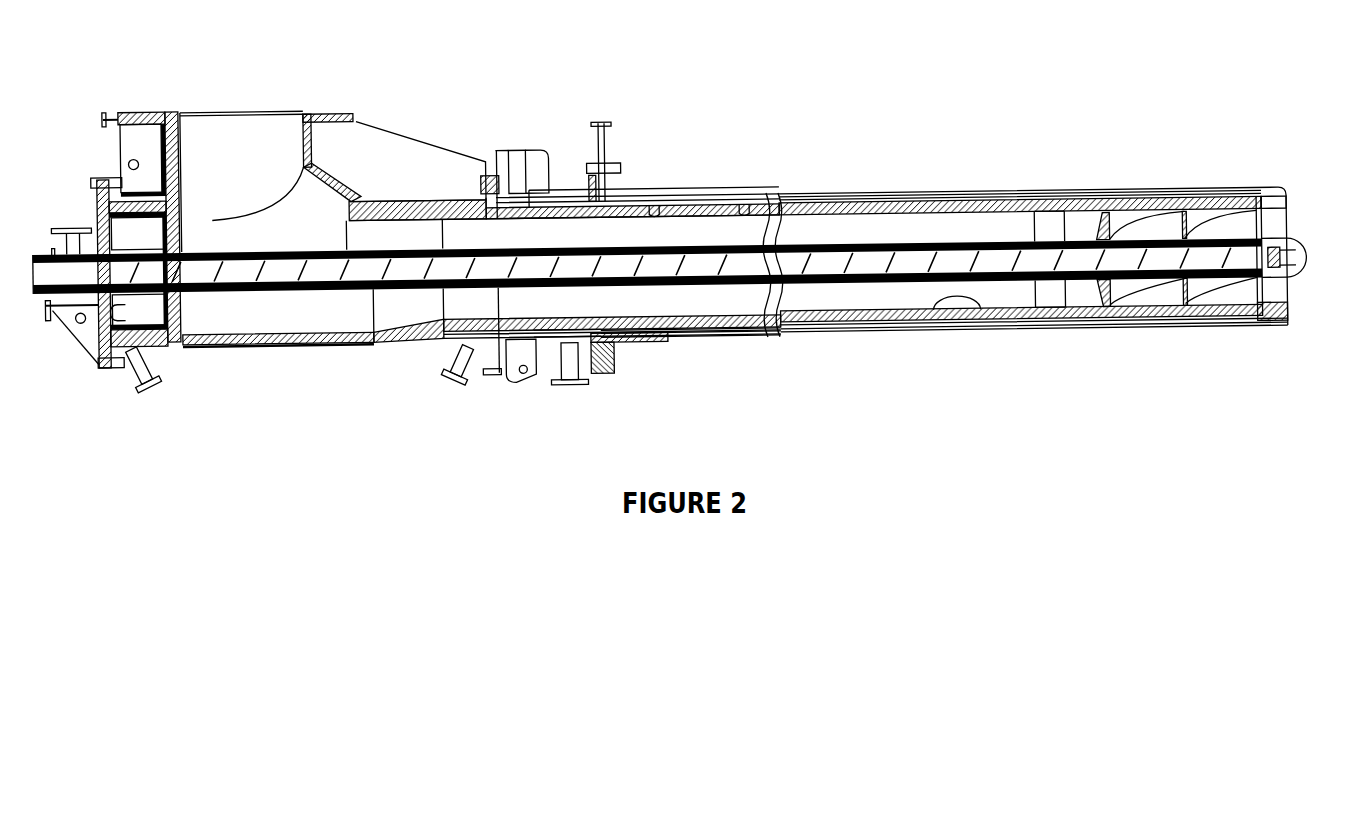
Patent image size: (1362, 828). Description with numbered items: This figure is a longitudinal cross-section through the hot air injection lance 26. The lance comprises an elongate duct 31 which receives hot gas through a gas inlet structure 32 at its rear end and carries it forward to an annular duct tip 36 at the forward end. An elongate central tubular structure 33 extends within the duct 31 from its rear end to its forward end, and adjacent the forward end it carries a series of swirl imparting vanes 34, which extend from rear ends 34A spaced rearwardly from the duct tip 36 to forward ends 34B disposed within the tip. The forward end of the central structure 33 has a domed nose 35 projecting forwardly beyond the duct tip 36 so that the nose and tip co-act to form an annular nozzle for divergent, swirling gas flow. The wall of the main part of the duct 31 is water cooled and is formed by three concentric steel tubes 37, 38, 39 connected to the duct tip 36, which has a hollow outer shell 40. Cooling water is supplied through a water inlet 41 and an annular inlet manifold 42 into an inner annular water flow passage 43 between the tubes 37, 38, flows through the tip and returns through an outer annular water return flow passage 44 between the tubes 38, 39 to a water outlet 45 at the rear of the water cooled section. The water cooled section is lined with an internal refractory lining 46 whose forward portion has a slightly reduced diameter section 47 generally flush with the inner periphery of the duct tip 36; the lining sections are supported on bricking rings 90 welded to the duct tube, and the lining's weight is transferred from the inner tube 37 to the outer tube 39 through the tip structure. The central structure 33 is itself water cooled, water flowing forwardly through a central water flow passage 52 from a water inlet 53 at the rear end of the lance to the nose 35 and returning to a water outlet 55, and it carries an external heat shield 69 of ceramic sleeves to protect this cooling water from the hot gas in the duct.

The hot air injection lance 26 is at (740, 194).
The elongate duct 31 is at (672, 232).
The gas inlet structure 32 is at (263, 126).
The elongate central tubular structure 33 is at (705, 294).
The swirl imparting vanes 34 is at (1193, 205).
The rear ends of vanes 34A is at (1108, 318).
The forward ends of vanes 34B is at (1268, 236).
The domed nose 35 is at (1300, 247).
The annular duct tip 36 is at (1270, 194).
The innermost tube 37 is at (717, 342).
The intermediate tube 38 is at (750, 342).
The outer tube 39 is at (745, 343).
The outer shell 40 is at (1277, 338).
The water inlet 41 is at (537, 162).
The annular inlet manifold 42 is at (545, 375).
The inner annular water flow passage 43 is at (697, 214).
The outer annular water return flow passage 44 is at (672, 343).
The water outlet 45 is at (570, 390).
The internal refractory lining 46 is at (630, 212).
The reduced diameter section 47 is at (1077, 337).
The central water flow passage 52 is at (233, 296).
The water inlet 53 is at (75, 372).
The water outlet 55 is at (70, 228).
The external heat shield 69 is at (290, 296).
The bricking rings 90 is at (655, 222).